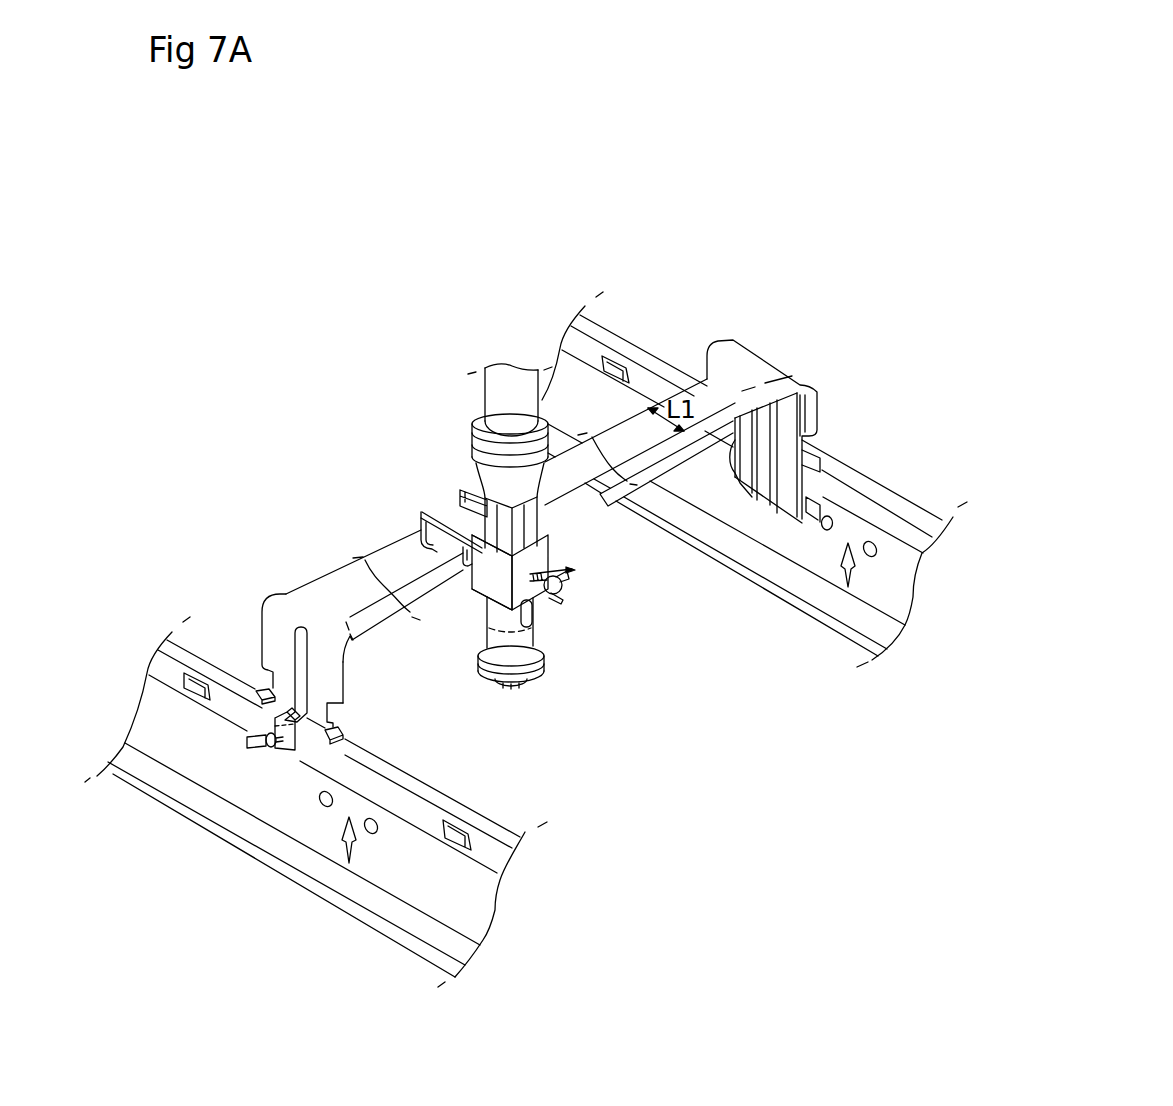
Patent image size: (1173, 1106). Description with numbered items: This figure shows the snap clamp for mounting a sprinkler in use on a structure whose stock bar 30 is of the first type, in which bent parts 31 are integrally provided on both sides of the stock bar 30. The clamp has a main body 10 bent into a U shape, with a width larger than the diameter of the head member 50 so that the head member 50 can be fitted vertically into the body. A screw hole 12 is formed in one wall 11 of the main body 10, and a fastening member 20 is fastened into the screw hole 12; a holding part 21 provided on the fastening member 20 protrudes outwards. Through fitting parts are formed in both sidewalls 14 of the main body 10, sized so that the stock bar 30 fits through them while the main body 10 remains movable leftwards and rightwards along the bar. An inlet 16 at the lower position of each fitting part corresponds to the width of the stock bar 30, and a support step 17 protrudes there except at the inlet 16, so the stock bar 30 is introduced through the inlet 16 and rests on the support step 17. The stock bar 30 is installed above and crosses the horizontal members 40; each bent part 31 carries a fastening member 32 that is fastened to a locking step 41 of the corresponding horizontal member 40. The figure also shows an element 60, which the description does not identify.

The main body 10 is at (421, 511).
The wall 11 is at (552, 557).
The screw hole 12 is at (500, 633).
The sidewalls 14 is at (492, 584).
The inlet 16 is at (470, 571).
The support step 17 is at (422, 553).
The fastening member 20 is at (577, 571).
The holding part 21 is at (564, 598).
The stock bar 30 is at (353, 582).
The bent parts 31 is at (328, 684).
The fastening member 32 is at (248, 750).
The horizontal member 40 is at (820, 557).
The locking step 41 is at (835, 527).
The head member 50 is at (533, 674).
The shaft slot 60 is at (538, 615).